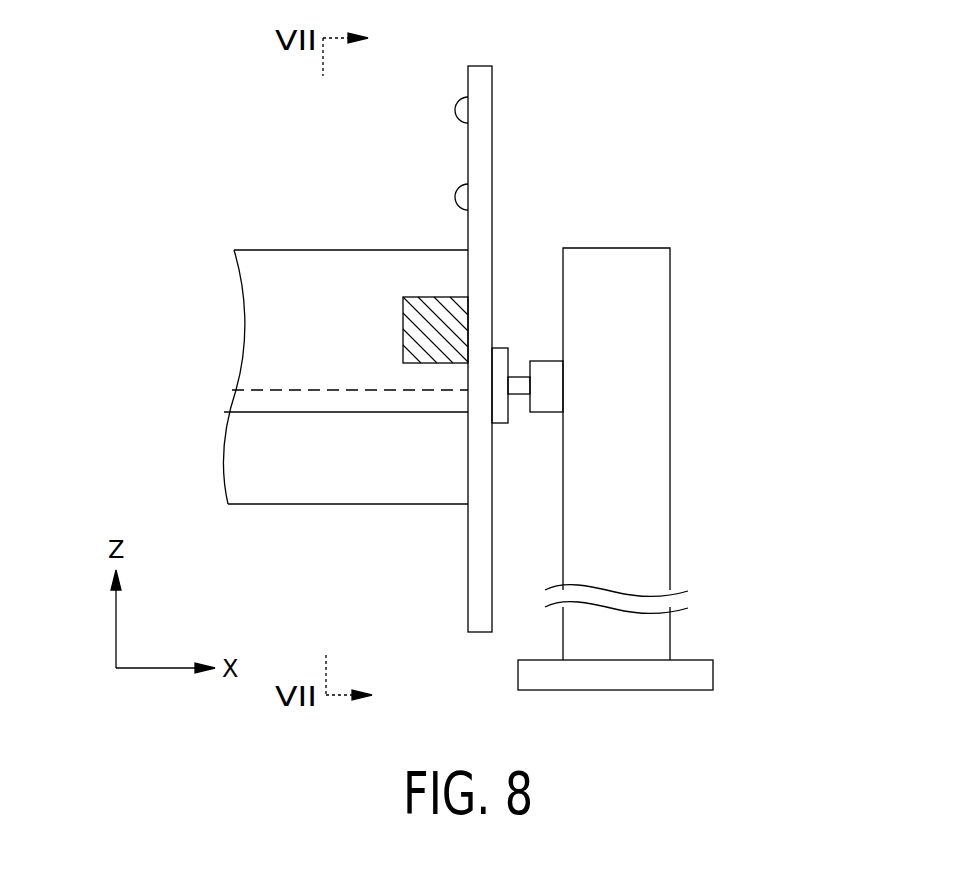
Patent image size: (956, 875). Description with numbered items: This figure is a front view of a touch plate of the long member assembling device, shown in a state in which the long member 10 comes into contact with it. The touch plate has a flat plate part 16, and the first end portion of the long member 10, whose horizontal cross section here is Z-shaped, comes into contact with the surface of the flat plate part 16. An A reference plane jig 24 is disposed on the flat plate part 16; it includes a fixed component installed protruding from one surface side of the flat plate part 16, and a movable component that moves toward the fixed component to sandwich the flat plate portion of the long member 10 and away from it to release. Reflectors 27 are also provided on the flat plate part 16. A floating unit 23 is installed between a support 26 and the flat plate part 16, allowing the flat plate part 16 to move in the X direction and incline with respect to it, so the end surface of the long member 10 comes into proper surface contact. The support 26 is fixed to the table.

The long member 10 is at (283, 478).
The flat plate part 16 is at (492, 87).
The floating unit 23 is at (519, 376).
The A reference plane jig 24 is at (403, 313).
The support 26 is at (670, 413).
The reflectors 27 is at (450, 108).